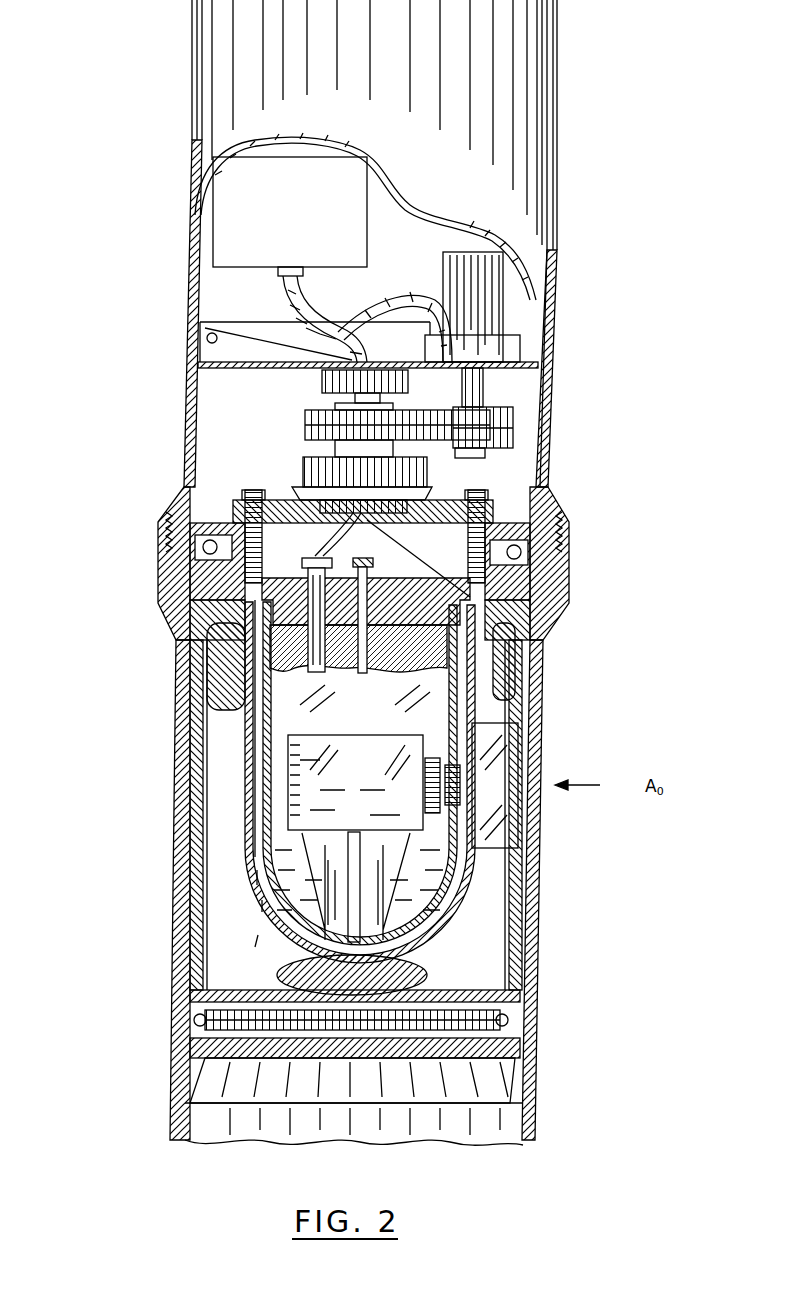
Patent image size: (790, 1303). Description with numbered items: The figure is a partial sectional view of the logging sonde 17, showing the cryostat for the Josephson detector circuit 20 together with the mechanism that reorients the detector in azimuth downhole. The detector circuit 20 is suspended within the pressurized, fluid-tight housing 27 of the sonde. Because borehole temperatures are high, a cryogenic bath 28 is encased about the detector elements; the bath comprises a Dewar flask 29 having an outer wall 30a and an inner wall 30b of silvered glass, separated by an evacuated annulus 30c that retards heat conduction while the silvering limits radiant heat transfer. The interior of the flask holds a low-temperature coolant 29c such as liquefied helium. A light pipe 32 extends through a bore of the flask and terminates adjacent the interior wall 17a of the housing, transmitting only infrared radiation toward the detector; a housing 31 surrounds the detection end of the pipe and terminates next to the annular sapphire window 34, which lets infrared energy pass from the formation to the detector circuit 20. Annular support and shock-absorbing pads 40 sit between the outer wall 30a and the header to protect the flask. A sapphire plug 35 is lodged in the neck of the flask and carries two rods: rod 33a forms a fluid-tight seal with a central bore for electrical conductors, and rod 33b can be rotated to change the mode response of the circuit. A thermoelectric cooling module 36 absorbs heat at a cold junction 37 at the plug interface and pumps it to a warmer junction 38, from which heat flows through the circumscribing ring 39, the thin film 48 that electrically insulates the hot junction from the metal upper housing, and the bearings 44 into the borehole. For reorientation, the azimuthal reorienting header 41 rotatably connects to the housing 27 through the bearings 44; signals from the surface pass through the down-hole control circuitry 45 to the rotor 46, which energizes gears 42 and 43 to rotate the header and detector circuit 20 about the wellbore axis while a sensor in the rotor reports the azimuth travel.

The logging sonde 17 is at (555, 78).
The down-hole control circuitry 45 is at (370, 222).
The rotor 46 is at (443, 280).
The housing 27 is at (552, 300).
The gear 43 is at (305, 422).
The gear 42 is at (513, 428).
The circumscribing ring 39 is at (450, 540).
The thermoelectric cooling module 36 is at (277, 530).
The thin film 48 is at (180, 502).
The warmer junction 38 is at (177, 552).
The bearings 44 is at (183, 542).
The azimuthal reorienting header 41 is at (200, 593).
The cold junction 37 is at (537, 612).
The plug 35 is at (370, 712).
The rod 33a is at (313, 645).
The rod 33b is at (362, 648).
The support and shock-absorbing pads 40 is at (230, 690).
The annular sapphire window 34 is at (173, 787).
The interior wall 17a is at (522, 695).
The cryogenic bath 28 is at (245, 810).
The Dewar flask 29 is at (240, 742).
The inner wall 30b is at (253, 857).
The evacuated annulus 30c is at (257, 885).
The outer wall 30a is at (262, 912).
The low-temperature coolant 29c is at (255, 947).
The light pipe 32 is at (425, 782).
The housing 31 is at (515, 740).
The Josephson detector circuit 20 is at (398, 815).